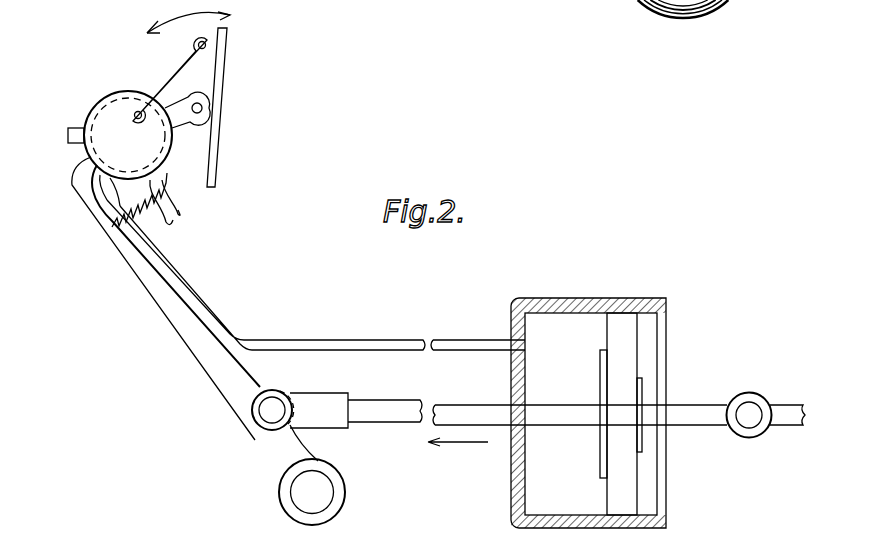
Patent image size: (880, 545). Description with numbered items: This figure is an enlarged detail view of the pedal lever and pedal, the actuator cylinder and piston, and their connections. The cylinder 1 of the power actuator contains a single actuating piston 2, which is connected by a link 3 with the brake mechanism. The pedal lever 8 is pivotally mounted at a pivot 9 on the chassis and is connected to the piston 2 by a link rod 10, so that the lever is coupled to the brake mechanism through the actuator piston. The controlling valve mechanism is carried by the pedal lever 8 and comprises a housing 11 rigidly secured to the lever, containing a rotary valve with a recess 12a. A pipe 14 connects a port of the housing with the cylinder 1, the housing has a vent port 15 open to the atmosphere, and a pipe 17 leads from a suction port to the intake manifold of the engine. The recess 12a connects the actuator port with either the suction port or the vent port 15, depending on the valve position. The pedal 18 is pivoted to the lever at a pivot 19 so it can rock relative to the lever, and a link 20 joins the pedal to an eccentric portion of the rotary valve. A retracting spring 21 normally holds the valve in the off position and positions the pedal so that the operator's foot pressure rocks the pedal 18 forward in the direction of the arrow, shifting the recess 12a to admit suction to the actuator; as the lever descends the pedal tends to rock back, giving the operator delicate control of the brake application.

The cylinder 1 is at (578, 306).
The actuating piston 2 is at (624, 358).
The link 3 is at (777, 408).
The pedal lever 8 is at (160, 303).
The pivot 9 is at (323, 494).
The link rod 10 is at (410, 421).
The housing 11 is at (119, 99).
The recess 12a is at (93, 123).
The pipe 14 is at (398, 345).
The vent port 15 is at (68, 138).
The pipe 17 is at (170, 221).
The pedal 18 is at (235, 70).
The pivot 19 is at (203, 108).
The link 20 is at (163, 80).
The retracting spring 21 is at (163, 191).